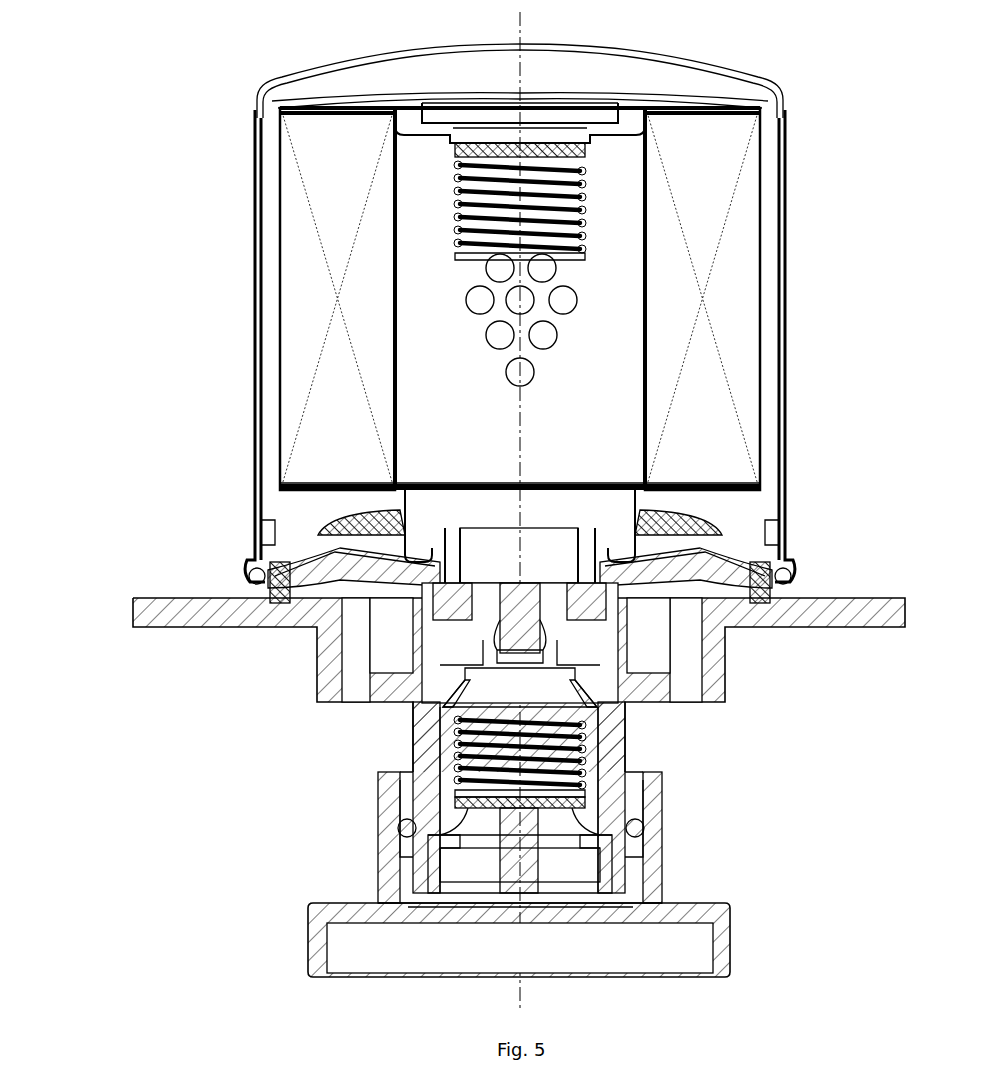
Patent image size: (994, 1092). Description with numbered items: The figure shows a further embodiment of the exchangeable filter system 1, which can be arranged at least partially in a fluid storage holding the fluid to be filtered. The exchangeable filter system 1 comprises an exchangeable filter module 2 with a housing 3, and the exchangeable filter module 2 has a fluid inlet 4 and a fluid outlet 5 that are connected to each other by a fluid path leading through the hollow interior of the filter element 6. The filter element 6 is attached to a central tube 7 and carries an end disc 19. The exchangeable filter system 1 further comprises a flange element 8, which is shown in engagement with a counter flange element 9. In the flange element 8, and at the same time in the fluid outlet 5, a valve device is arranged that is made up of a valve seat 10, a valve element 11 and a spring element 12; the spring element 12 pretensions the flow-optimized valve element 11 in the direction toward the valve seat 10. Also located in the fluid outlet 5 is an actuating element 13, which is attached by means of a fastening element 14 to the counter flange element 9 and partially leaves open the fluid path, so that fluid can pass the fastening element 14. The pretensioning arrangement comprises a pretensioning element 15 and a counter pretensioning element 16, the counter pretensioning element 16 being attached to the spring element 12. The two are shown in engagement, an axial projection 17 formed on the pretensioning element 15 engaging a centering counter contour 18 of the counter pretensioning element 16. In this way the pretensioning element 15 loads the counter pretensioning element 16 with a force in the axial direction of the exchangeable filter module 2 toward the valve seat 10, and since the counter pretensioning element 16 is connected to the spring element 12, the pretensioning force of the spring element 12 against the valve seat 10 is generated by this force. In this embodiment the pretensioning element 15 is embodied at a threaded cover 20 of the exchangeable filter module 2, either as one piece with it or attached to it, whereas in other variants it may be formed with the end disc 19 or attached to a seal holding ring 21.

The exchangeable filter system 1 is at (152, 181).
The exchangeable filter module 2 is at (258, 96).
The housing 3 is at (258, 152).
The fluid inlet 4 is at (345, 703).
The fluid outlet 5 is at (428, 948).
The filter element 6 is at (738, 253).
The central tube 7 is at (648, 243).
The flange element 8 is at (612, 738).
The counter flange element 9 is at (652, 832).
The valve seat 10 is at (643, 824).
The valve element 11 is at (593, 830).
The spring element 12 is at (586, 786).
The actuating element 13 is at (530, 890).
The fastening element 14 is at (570, 923).
The pretensioning element 15 is at (560, 637).
The counter pretensioning element 16 is at (597, 703).
The axial projection 17 is at (548, 641).
The centering counter contour 18 is at (497, 648).
The end disc 19 is at (390, 483).
The threaded cover 20 is at (600, 587).
The seal holding ring 21 is at (602, 536).